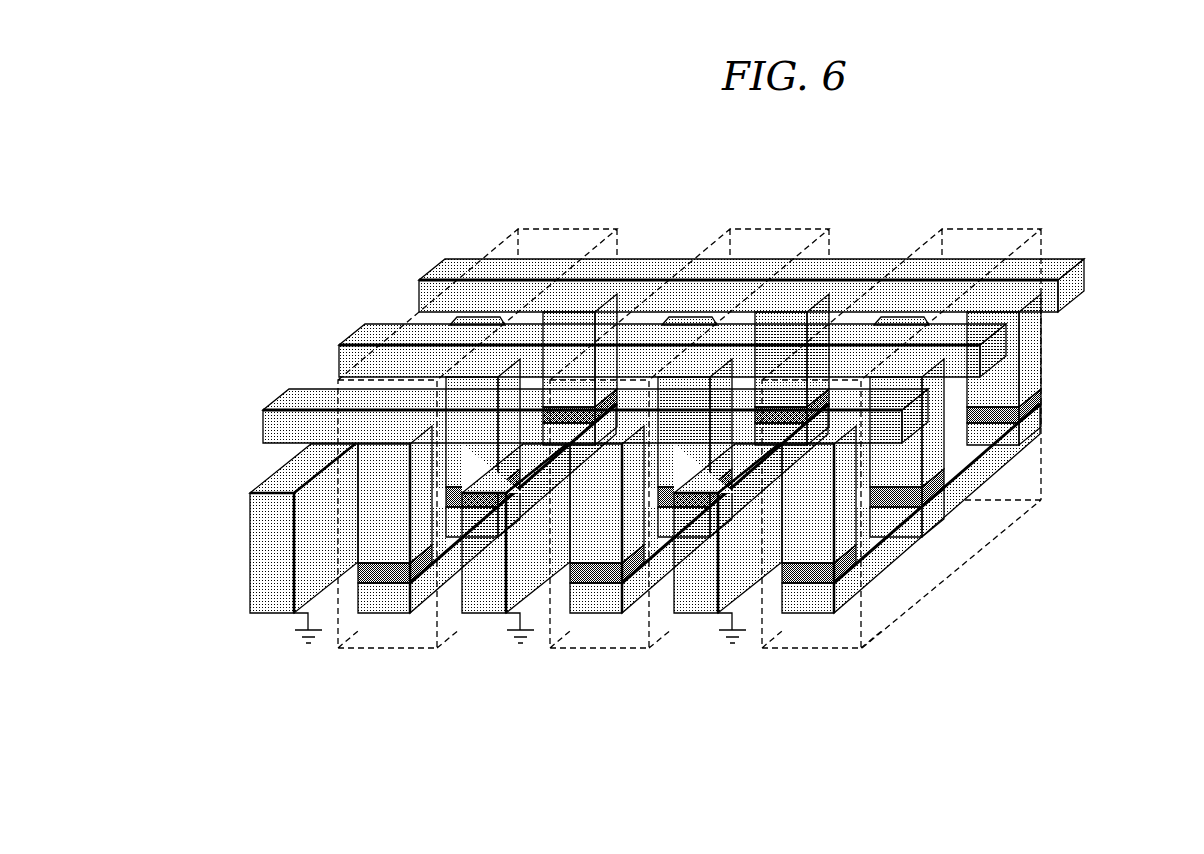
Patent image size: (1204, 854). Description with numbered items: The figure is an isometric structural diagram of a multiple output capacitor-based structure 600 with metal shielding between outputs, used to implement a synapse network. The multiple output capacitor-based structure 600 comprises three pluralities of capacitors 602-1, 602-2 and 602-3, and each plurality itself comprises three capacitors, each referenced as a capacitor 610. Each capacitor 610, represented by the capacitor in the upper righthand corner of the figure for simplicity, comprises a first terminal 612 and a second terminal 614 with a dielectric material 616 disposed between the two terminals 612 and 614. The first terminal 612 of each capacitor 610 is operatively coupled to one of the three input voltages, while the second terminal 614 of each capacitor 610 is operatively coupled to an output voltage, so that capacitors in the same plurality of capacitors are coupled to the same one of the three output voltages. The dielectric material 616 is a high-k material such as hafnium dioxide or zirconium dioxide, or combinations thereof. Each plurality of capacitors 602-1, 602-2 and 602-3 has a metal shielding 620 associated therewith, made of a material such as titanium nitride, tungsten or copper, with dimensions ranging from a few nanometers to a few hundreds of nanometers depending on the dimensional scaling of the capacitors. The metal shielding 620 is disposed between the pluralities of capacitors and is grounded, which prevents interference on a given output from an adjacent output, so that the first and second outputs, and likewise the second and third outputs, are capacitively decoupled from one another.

The multiple output capacitor-based structure 600 is at (801, 134).
The first plurality of capacitors 602-1 is at (601, 219).
The second plurality of capacitors 602-2 is at (813, 219).
The third plurality of capacitors 602-3 is at (1024, 219).
The capacitor 610 is at (767, 468).
The first terminal 612 is at (1041, 345).
The second terminal 614 is at (735, 508).
The dielectric material 616 is at (1041, 397).
The metal shielding 620 is at (712, 565).